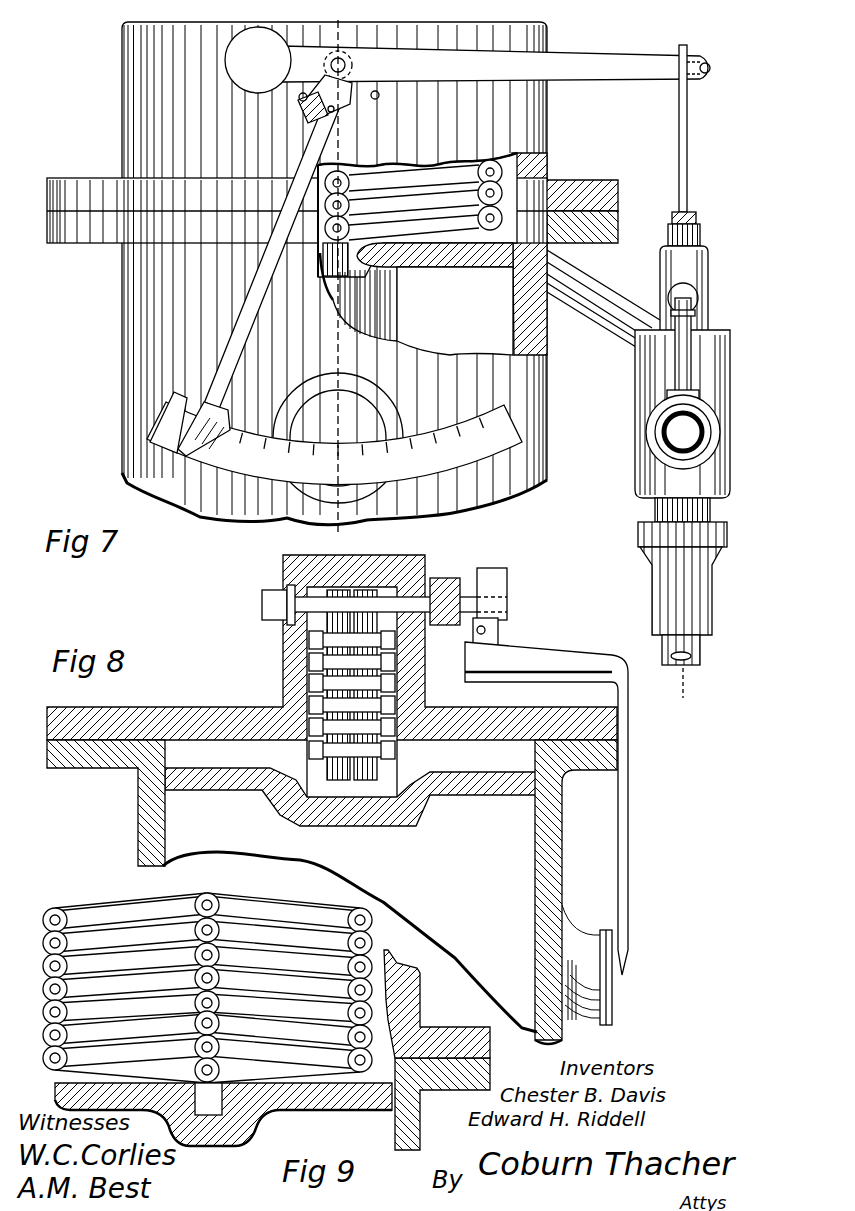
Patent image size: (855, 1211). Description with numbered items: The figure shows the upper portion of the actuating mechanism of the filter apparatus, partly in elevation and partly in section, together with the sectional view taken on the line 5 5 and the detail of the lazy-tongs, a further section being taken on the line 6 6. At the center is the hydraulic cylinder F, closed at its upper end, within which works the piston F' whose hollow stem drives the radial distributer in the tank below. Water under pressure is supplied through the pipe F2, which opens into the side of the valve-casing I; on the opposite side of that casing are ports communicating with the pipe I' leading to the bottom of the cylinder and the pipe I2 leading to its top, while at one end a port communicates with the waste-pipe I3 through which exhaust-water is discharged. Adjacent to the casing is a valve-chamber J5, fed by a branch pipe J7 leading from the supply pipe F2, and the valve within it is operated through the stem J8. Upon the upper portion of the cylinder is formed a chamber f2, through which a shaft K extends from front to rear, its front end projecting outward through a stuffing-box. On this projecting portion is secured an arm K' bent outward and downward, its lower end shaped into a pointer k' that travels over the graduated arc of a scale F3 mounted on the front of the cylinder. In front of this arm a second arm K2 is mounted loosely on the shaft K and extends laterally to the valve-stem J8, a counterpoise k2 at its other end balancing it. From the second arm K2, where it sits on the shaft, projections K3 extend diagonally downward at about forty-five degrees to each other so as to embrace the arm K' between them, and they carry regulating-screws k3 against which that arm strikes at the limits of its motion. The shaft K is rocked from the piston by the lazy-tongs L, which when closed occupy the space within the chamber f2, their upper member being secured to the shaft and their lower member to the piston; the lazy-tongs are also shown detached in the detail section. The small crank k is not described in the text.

In FIG. 7, the cylinder F is at (350, 273).
In FIG. 8, the cylinder F is at (332, 892).
In FIG. 9, the cylinder F is at (442, 1104).
In FIG. 7, the piston F' is at (416, 304).
In FIG. 8, the piston F' is at (351, 789).
In FIG. 9, the piston F' is at (223, 1114).
In FIG. 7, the pipe F2 is at (690, 433).
In FIG. 7, the scale F3 is at (334, 443).
In FIG. 8, the scale F3 is at (612, 1000).
In FIG. 7, the chamber f2 is at (128, 128).
In FIG. 8, the chamber f2 is at (283, 655).
In FIG. 9, the chamber f2 is at (405, 1000).
In FIG. 7, the valve-casing I is at (697, 414).
In FIG. 7, the pipe I' is at (702, 653).
In FIG. 7, the pipe I2 is at (585, 295).
In FIG. 7, the waste-pipe I3 is at (712, 597).
In FIG. 7, the valve-chamber J5 is at (700, 282).
In FIG. 7, the branch pipe J7 is at (690, 326).
In FIG. 7, the stem J8 is at (687, 143).
In FIG. 8, the shaft K is at (409, 601).
In FIG. 7, the arm K' is at (275, 247).
In FIG. 8, the arm K' is at (567, 796).
In FIG. 7, the second arm K2 is at (578, 62).
In FIG. 7, the projections K3 is at (310, 105).
In FIG. 8, the crank k is at (470, 578).
In FIG. 7, the pointer k' is at (156, 414).
In FIG. 7, the counterpoise k2 is at (258, 60).
In FIG. 7, the regulating-screws k3 is at (300, 97).
In FIG. 7, the lazy-tongs L is at (417, 215).
In FIG. 8, the lazy-tongs L is at (307, 690).
In FIG. 9, the lazy-tongs L is at (100, 920).
In FIG. 7, the section line 5 is at (337, 276).
In FIG. 7, the section line 6 is at (682, 371).